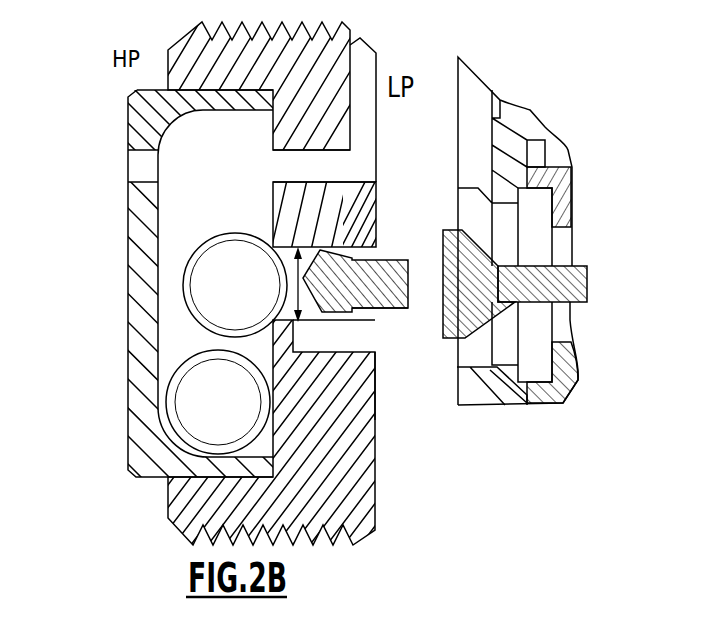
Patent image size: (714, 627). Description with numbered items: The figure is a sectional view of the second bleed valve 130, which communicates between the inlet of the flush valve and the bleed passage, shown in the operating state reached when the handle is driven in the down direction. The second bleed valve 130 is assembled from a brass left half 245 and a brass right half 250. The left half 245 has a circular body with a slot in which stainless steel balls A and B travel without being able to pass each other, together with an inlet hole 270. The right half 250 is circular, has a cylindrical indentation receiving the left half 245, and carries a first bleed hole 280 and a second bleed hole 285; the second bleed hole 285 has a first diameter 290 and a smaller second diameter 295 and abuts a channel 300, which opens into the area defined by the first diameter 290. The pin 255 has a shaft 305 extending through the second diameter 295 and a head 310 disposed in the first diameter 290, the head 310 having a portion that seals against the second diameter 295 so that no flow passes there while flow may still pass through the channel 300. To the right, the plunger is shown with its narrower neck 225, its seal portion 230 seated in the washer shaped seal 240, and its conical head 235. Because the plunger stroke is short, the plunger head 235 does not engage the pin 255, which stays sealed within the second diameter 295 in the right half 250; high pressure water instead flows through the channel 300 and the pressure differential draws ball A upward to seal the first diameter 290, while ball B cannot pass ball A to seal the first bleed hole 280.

The second bleed valve 130 is at (140, 522).
The neck 225 is at (563, 278).
The seal portion 230 is at (498, 258).
The conical head 235 is at (453, 242).
The seal 240 is at (532, 327).
The left half 245 is at (128, 430).
The right half 250 is at (378, 407).
The pin 255 is at (408, 260).
The inlet hole 270 is at (135, 167).
The first bleed hole 280 is at (273, 165).
The second bleed hole 285 is at (282, 258).
The first diameter 290 is at (304, 320).
The second diameter 295 is at (367, 296).
The channel 300 is at (377, 357).
The shaft 305 is at (339, 245).
The head 310 is at (370, 278).